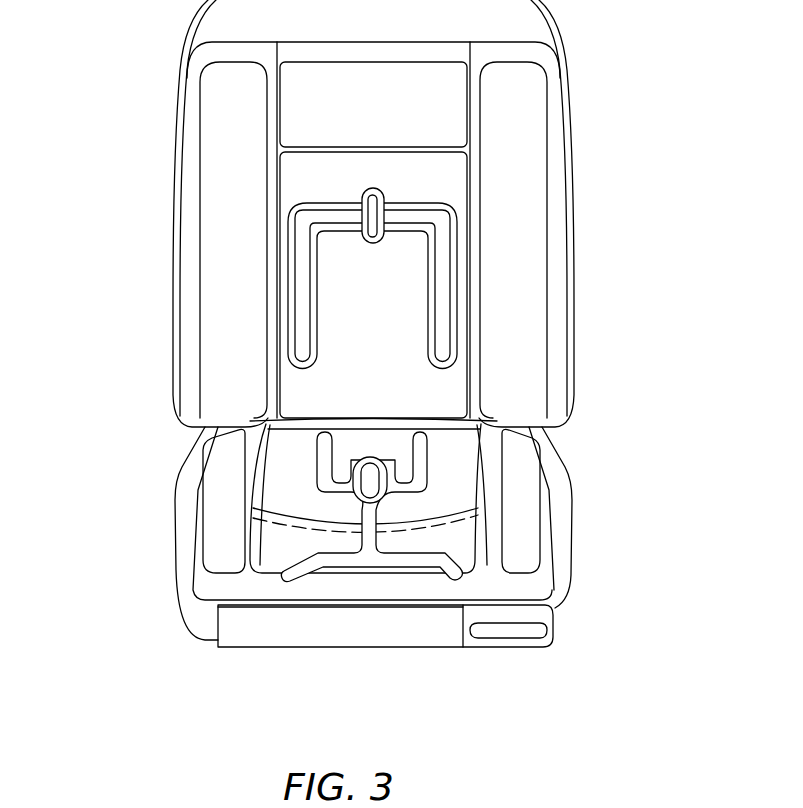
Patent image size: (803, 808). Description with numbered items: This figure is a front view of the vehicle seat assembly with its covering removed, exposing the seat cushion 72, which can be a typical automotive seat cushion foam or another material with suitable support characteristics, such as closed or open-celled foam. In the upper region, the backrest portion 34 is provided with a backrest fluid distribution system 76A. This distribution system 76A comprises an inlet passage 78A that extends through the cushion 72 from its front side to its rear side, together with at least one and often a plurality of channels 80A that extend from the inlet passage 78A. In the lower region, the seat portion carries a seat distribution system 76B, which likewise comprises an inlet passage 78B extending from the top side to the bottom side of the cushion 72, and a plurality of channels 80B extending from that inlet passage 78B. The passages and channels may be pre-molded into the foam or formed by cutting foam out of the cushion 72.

The backrest portion 34 is at (587, 127).
The seat cushion 72 is at (520, 103).
The backrest fluid distribution system 76A is at (358, 242).
The inlet passage 78A is at (372, 218).
The channels 80A is at (455, 352).
The seat distribution system 76B is at (474, 507).
The inlet passage 78B is at (378, 492).
The channels 80B is at (455, 566).